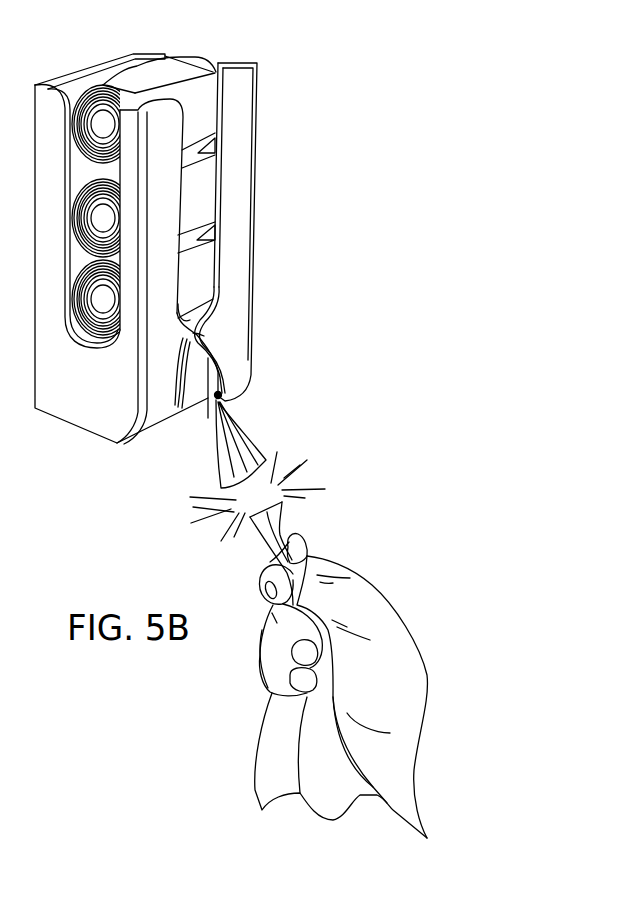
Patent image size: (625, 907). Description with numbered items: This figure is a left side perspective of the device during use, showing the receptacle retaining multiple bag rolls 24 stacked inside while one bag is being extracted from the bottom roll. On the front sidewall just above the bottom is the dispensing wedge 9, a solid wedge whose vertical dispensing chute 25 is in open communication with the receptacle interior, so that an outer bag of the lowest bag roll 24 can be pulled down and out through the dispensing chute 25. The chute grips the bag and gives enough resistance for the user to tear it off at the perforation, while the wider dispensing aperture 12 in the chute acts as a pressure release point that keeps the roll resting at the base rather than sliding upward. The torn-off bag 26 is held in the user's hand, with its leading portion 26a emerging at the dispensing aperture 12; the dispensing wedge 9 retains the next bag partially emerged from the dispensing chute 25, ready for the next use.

The bag roll 24 is at (198, 63).
The dispensing chute 25 is at (222, 360).
The dispensing aperture 12 is at (223, 390).
The dispensing wedge 9 is at (193, 400).
The leading portion of film 26a is at (240, 438).
The dispensed film sheet 26 is at (267, 737).